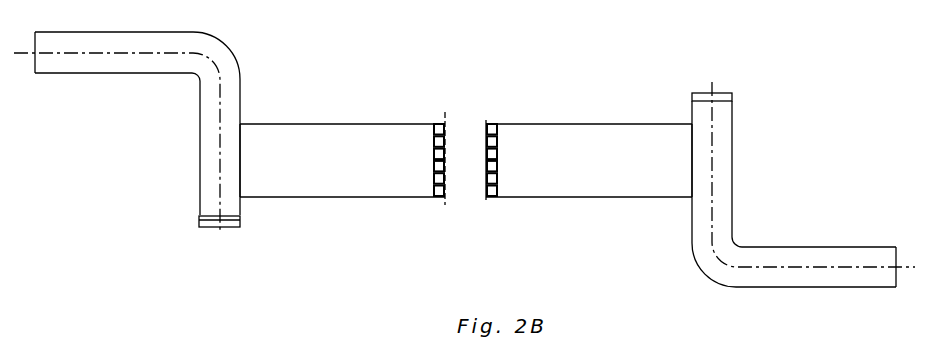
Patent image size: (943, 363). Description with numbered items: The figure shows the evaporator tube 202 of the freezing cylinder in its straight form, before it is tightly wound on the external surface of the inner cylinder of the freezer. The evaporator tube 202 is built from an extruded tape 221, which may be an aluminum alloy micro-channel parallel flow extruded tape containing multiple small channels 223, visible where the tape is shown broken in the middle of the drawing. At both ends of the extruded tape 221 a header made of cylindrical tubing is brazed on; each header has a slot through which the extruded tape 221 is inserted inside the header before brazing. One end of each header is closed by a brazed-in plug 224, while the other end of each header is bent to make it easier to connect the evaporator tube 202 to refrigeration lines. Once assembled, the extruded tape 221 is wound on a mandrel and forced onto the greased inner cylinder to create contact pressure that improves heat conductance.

The evaporator tube 202 is at (590, 80).
The extruded tape 221 is at (320, 136).
The small channels 223 is at (441, 124).
The brazed-in plug 224 is at (227, 223).